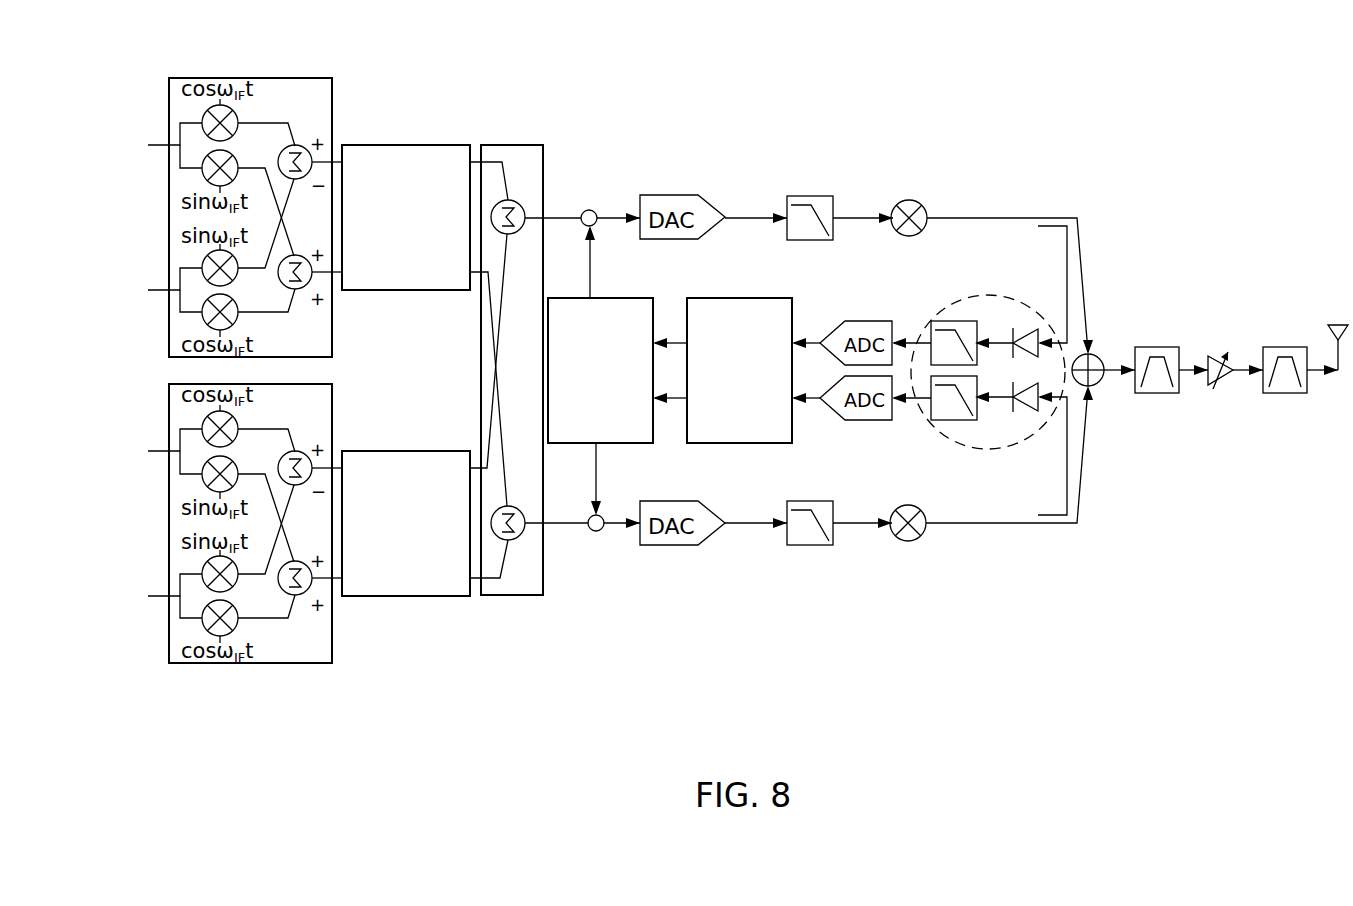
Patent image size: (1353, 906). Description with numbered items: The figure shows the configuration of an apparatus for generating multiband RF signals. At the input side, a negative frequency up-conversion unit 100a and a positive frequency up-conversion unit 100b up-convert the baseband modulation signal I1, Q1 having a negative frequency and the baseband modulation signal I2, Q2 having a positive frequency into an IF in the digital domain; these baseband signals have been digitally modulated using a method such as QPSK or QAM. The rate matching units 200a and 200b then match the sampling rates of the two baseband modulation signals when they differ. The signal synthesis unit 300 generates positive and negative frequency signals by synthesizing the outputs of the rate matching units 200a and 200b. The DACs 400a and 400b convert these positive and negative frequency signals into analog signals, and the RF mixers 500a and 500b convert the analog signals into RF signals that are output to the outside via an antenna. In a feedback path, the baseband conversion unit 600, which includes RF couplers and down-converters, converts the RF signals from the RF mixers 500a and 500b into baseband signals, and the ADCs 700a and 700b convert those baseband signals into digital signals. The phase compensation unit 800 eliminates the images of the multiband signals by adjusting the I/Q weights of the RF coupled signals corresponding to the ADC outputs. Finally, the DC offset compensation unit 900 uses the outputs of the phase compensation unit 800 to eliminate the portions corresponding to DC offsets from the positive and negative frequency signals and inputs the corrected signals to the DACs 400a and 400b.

The negative frequency up-conversion unit 100a is at (245, 78).
The positive frequency up-conversion unit 100b is at (245, 663).
The rate matching unit 200a is at (398, 145).
The rate matching unit 200b is at (398, 451).
The signal synthesis unit 300 is at (508, 145).
The digital-analog converter 400a is at (668, 195).
The digital-analog converter 400b is at (668, 547).
The RF mixer 500a is at (904, 178).
The RF mixer 500b is at (905, 560).
The baseband conversion unit 600 is at (988, 295).
The analog-digital converter 700a is at (862, 321).
The analog-digital converter 700b is at (862, 421).
The phase compensation unit 800 is at (735, 298).
The DC offset compensation unit 900 is at (634, 298).